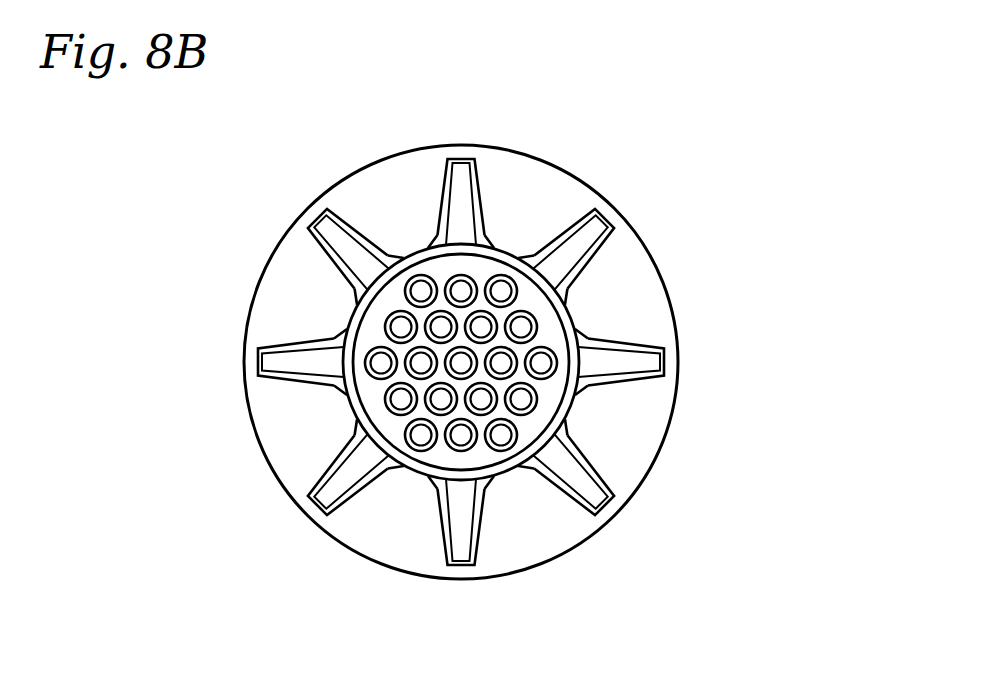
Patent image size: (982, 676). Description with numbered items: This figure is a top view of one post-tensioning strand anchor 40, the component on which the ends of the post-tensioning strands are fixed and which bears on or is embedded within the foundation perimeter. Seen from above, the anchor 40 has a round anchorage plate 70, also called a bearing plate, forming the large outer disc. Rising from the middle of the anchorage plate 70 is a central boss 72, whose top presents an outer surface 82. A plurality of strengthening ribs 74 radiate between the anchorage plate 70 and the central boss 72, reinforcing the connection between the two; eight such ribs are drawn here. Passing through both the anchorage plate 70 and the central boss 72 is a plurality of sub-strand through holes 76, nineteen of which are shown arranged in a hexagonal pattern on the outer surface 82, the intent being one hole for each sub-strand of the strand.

The post-tensioning strand anchor 40 is at (728, 188).
The anchorage plate 70 is at (388, 188).
The central boss 72 is at (495, 243).
The strengthening ribs 74 is at (462, 175).
The sub-strand through holes 76 is at (378, 360).
The outer surface 82 is at (555, 328).